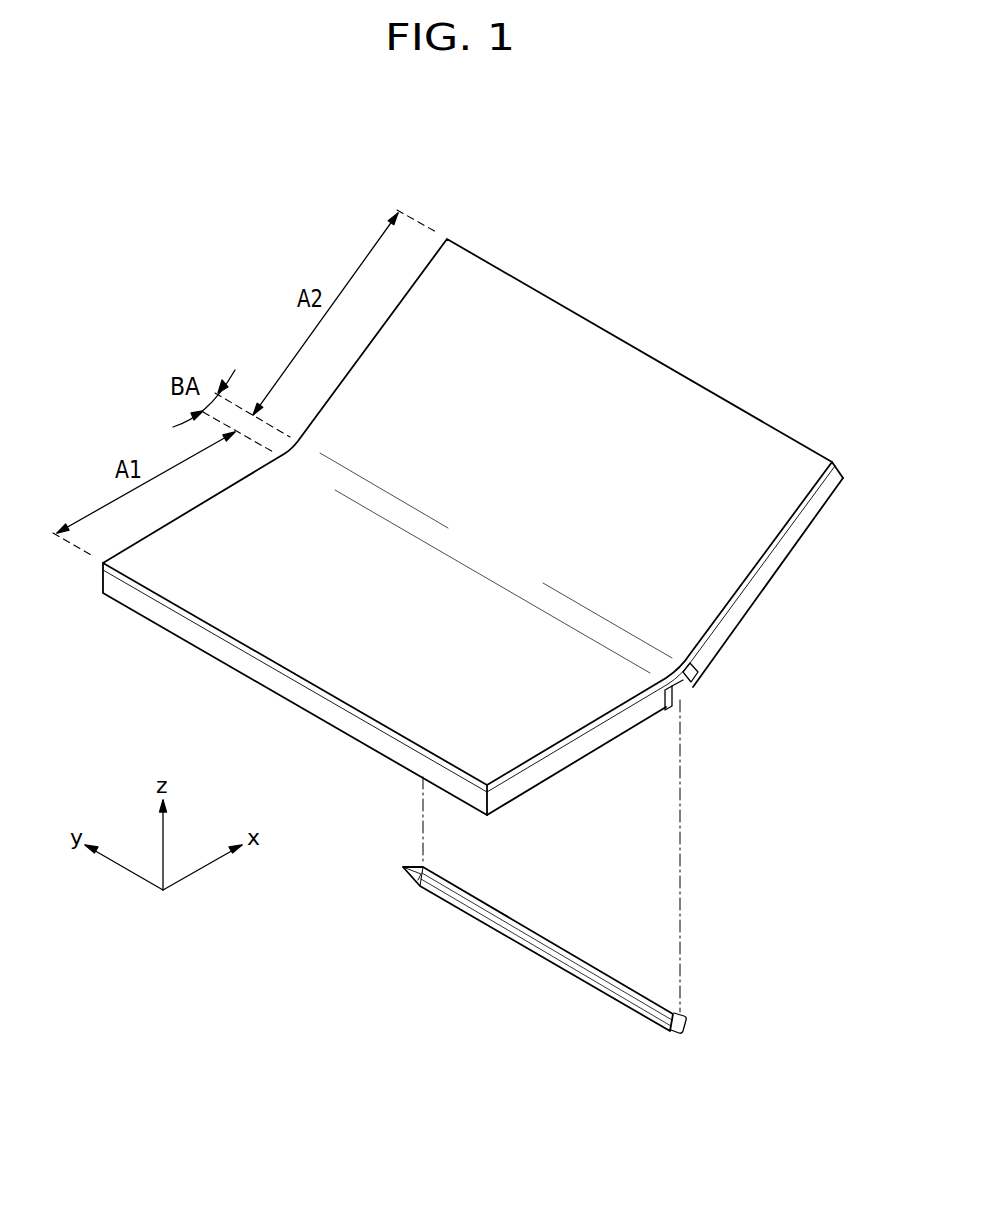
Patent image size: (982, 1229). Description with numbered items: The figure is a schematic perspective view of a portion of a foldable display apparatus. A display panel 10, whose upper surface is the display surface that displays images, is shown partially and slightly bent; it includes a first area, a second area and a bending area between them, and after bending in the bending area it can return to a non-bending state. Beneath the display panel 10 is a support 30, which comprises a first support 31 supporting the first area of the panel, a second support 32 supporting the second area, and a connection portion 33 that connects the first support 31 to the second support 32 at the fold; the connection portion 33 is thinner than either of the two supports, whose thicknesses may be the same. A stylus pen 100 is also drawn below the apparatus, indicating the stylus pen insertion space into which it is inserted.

The display panel 10 is at (830, 464).
The support 30 is at (473, 646).
The first support 31 is at (643, 715).
The second support 32 is at (712, 648).
The connection portion 33 is at (677, 683).
The stylus pen 100 is at (513, 942).